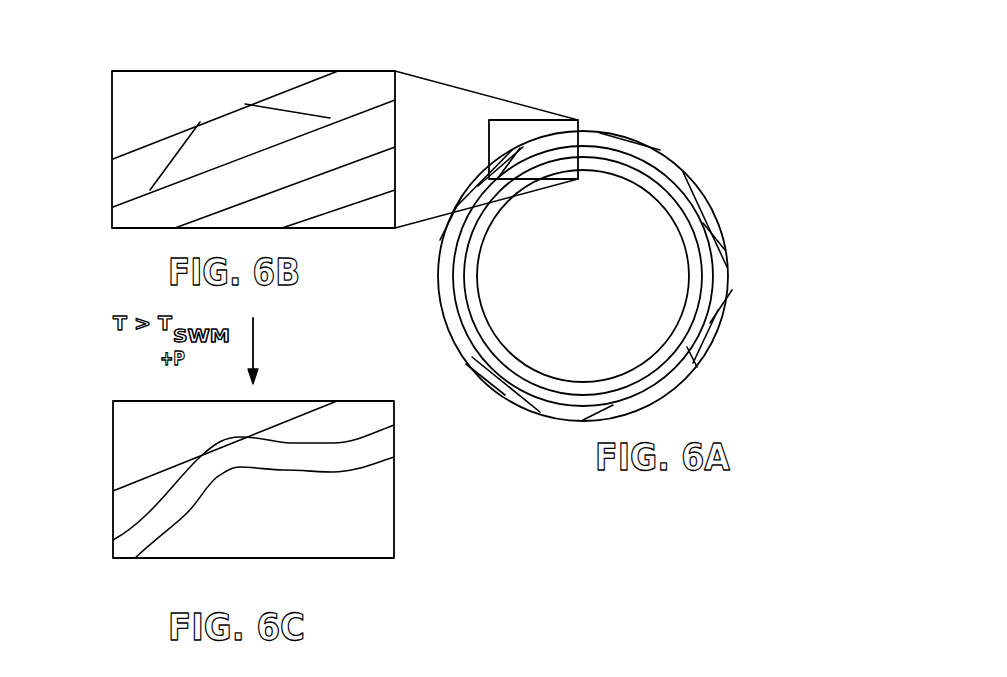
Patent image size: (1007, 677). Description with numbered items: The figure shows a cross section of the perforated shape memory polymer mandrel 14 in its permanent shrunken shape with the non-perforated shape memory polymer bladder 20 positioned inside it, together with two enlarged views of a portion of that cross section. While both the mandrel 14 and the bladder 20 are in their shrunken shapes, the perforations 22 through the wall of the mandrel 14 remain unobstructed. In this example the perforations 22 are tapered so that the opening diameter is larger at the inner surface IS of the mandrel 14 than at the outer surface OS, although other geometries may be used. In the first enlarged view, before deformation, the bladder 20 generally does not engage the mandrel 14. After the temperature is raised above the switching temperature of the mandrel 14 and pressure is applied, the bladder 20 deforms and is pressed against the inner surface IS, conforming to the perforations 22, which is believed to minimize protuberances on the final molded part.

In FIG. 6B, the mandrel 14 is at (372, 88).
In FIG. 6A, the mandrel 14 is at (608, 140).
In FIG. 6C, the mandrel 14 is at (140, 500).
In FIG. 6B, the bladder 20 is at (330, 187).
In FIG. 6A, the bladder 20 is at (692, 272).
In FIG. 6C, the bladder 20 is at (167, 517).
In FIG. 6B, the perforations 22 is at (185, 148).
In FIG. 6A, the perforations 22 is at (650, 148).
In FIG. 6B, the inner surface IS is at (343, 122).
In FIG. 6A, the inner surface IS is at (672, 195).
In FIG. 6B, the outer surface OS is at (140, 143).
In FIG. 6A, the outer surface OS is at (437, 290).